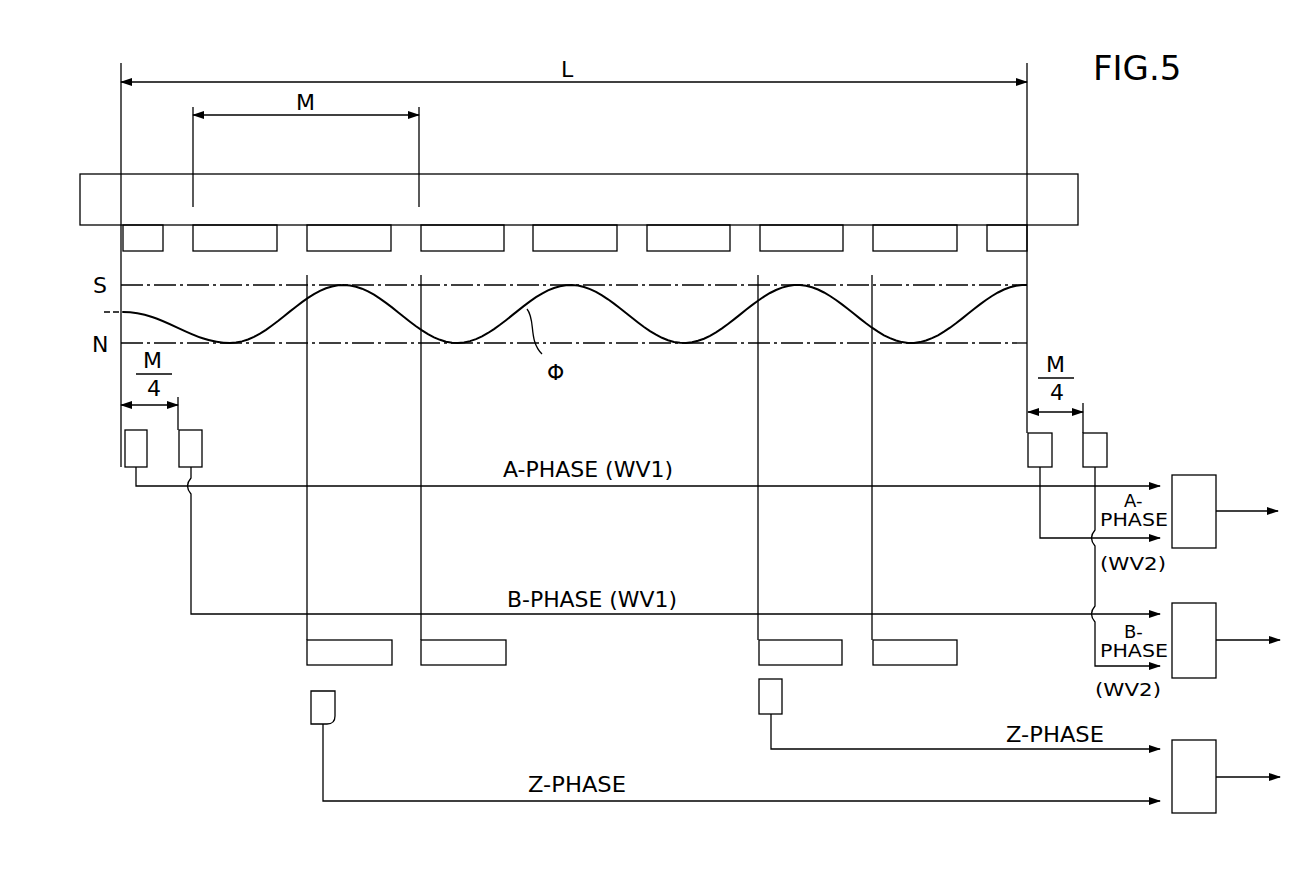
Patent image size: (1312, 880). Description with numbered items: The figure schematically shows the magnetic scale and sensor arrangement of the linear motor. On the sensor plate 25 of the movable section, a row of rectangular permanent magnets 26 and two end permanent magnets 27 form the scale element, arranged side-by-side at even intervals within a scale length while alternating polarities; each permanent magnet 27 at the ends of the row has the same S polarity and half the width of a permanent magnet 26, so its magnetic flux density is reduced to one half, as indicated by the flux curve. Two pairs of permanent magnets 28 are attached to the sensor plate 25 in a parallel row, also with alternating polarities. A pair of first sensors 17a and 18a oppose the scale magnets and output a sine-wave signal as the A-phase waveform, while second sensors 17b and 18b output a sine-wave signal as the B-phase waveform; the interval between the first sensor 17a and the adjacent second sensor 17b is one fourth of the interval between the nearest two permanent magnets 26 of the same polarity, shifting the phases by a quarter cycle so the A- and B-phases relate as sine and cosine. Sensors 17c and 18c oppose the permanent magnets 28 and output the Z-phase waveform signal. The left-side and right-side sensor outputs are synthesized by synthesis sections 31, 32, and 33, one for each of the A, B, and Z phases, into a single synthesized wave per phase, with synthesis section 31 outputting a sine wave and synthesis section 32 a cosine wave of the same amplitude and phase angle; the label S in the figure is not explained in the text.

The sensor plate 25 is at (1050, 174).
The permanent magnet 26 is at (233, 235).
The permanent magnet 27 is at (153, 235).
The permanent magnet 28 is at (364, 652).
The first sensor 17a is at (132, 446).
The second sensor 17b is at (194, 448).
The second sensor 17c is at (317, 708).
The first sensor 18a is at (1035, 448).
The second sensor 18b is at (1098, 449).
The second sensor 18c is at (757, 691).
The synthesis section 31 is at (1200, 475).
The synthesis section 32 is at (1203, 603).
The synthesis section 33 is at (1203, 744).
The sensor system S is at (1182, 128).